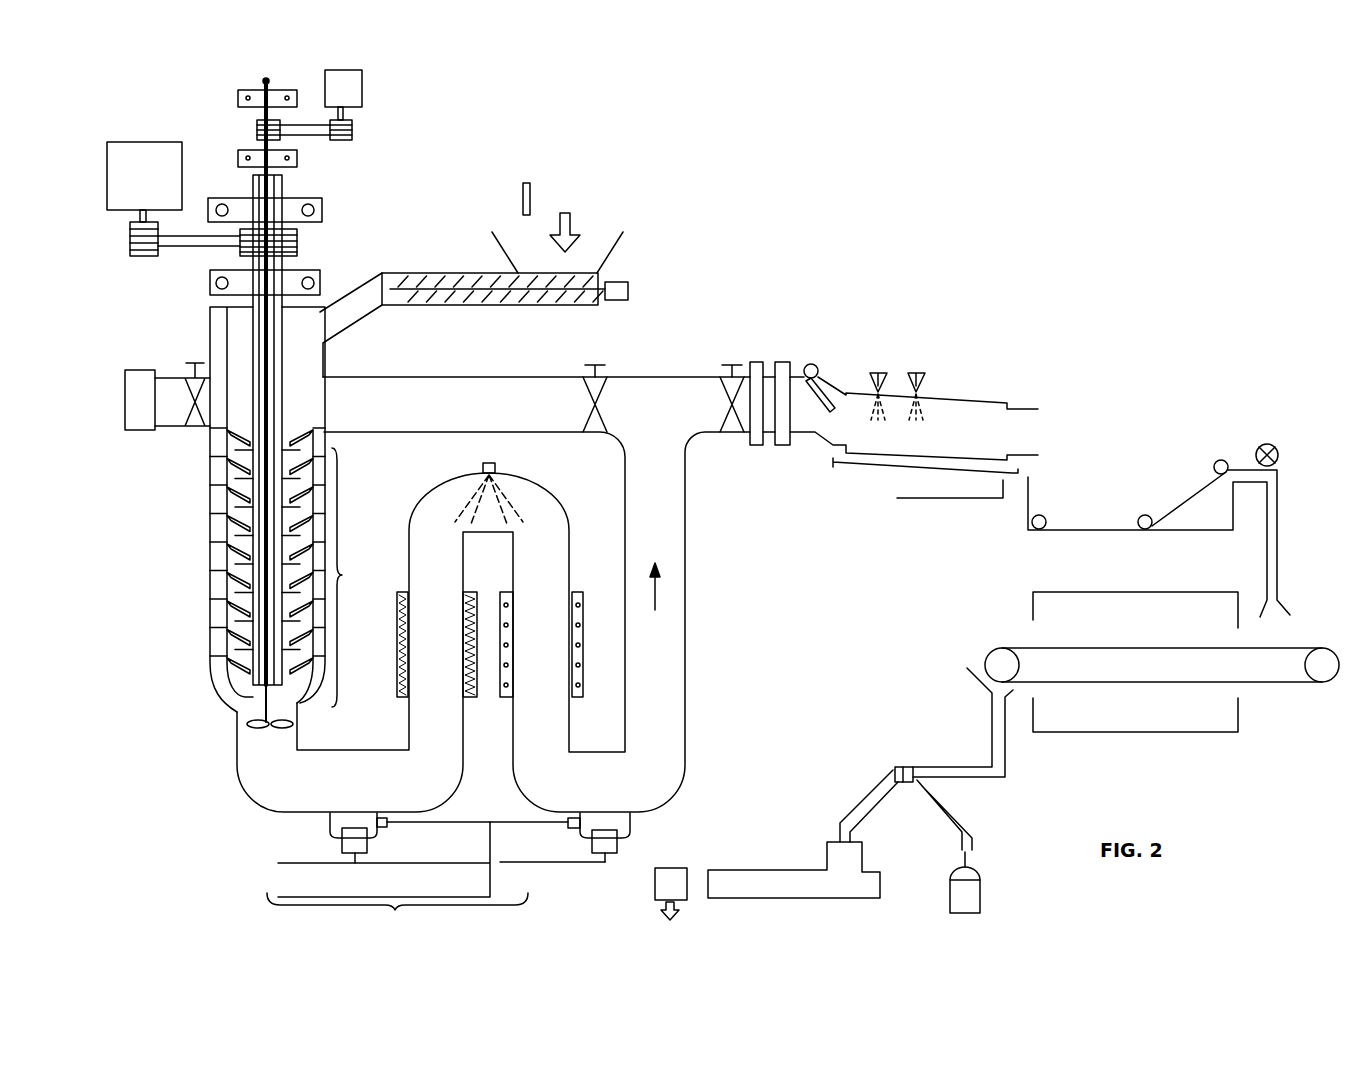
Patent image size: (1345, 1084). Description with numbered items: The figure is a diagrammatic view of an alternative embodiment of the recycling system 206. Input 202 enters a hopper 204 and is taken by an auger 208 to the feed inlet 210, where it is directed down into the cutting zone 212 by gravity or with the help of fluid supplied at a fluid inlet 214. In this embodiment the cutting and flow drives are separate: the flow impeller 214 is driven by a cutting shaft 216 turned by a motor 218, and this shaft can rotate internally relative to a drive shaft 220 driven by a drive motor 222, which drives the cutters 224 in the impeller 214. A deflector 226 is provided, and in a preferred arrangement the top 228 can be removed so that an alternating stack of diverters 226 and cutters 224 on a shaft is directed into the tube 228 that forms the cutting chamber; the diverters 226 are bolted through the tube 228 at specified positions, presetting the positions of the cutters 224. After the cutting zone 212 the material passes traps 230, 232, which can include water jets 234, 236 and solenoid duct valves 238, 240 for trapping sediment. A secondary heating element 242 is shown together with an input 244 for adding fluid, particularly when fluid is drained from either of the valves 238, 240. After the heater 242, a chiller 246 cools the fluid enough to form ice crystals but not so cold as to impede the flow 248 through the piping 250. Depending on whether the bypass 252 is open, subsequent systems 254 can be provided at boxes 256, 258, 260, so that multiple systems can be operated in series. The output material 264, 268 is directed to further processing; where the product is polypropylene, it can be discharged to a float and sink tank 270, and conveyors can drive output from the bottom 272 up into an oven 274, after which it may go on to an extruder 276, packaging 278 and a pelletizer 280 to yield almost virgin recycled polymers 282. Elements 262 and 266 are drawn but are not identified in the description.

The input 202 is at (571, 223).
The hopper 204 is at (616, 250).
The system 206 is at (677, 292).
The auger 208 is at (540, 303).
The feed inlet 210 is at (322, 318).
The cutting zone 212 is at (355, 577).
The fluid inlet / flow impeller 214 is at (531, 196).
The cutting shaft 216 is at (272, 176).
The motor 218 is at (357, 92).
The drive shaft 220 is at (256, 191).
The drive motor 222 is at (170, 156).
The cutters 224 is at (230, 455).
The deflector / diverters 226 is at (230, 520).
The top / tube 228 is at (208, 311).
The trap 230 is at (340, 820).
The trap 232 is at (625, 822).
The water jet 234 is at (372, 817).
The water jet 236 is at (588, 813).
The solenoid duct valve 238 is at (362, 843).
The solenoid duct valve 240 is at (613, 838).
The secondary heating element 242 is at (397, 661).
The input 244 is at (495, 468).
The chiller 246 is at (583, 602).
The flow 248 is at (660, 586).
The piping 250 is at (681, 680).
The bypass 252 is at (600, 396).
The subsequent systems 254 is at (436, 875).
The box 256 is at (140, 370).
The box 258 is at (755, 362).
The box 260 is at (785, 362).
The valve / conveyor tray 262 is at (732, 372).
The output material 264 is at (875, 373).
The spray nozzle 266 is at (917, 373).
The output material 268 is at (947, 488).
The float and sink tank 270 is at (1093, 505).
The bottom 272 is at (1117, 531).
The oven 274 is at (1138, 603).
The extruder 276 is at (862, 881).
The packaging 278 is at (968, 876).
The pelletizer 280 is at (672, 868).
The recycled polymers 282 is at (665, 905).